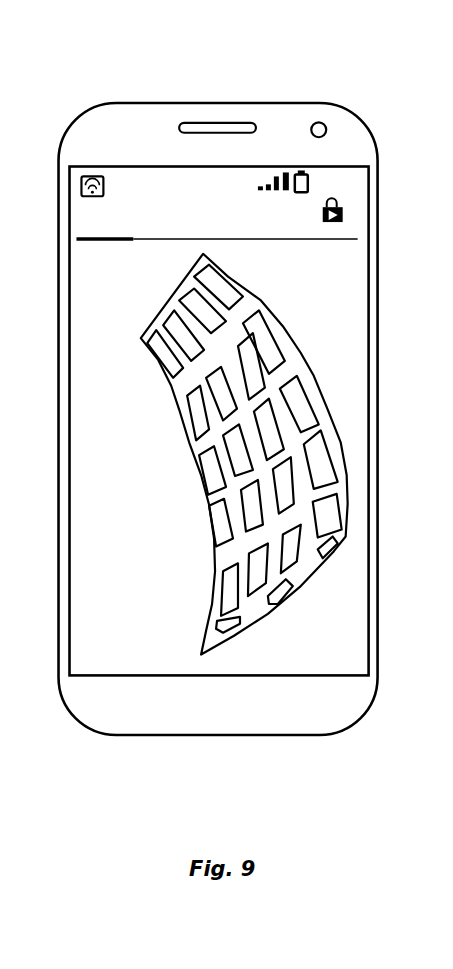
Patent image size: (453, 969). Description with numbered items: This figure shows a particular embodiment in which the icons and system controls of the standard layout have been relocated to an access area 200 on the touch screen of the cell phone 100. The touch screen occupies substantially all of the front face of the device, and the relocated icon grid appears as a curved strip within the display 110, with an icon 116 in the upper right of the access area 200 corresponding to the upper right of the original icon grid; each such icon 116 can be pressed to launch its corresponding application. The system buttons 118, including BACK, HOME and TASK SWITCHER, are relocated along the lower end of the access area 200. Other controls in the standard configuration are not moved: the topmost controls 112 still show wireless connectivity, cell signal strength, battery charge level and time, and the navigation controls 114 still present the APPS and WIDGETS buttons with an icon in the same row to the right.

The cell phone 100 is at (360, 102).
The display 110 is at (343, 158).
The topmost controls 112 is at (357, 166).
The navigation controls 114 is at (355, 200).
The icon 116 is at (232, 272).
The system buttons 118 is at (200, 620).
The access area 200 is at (221, 454).